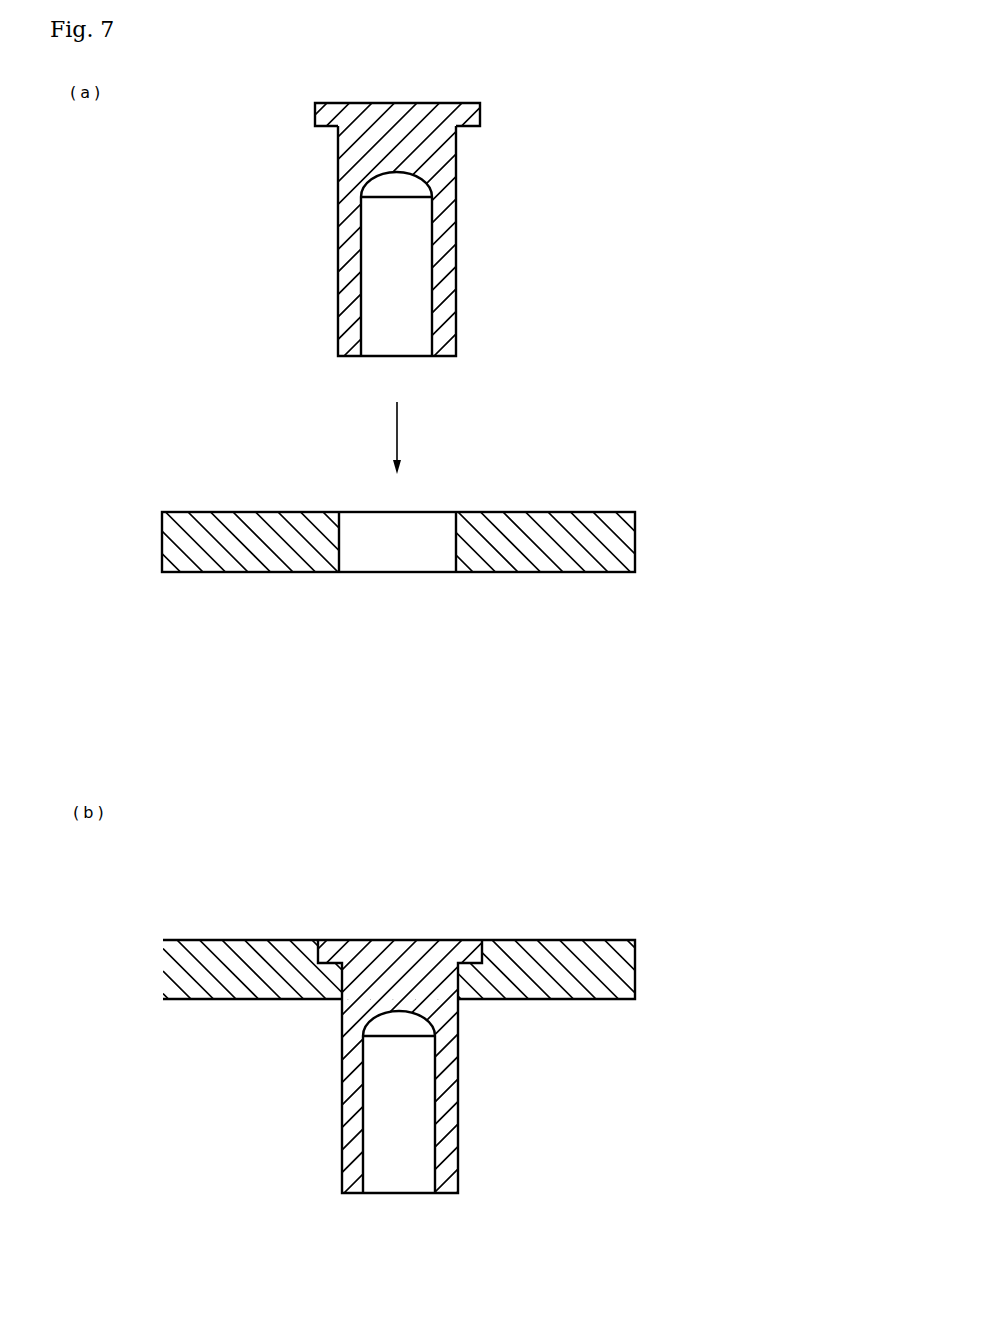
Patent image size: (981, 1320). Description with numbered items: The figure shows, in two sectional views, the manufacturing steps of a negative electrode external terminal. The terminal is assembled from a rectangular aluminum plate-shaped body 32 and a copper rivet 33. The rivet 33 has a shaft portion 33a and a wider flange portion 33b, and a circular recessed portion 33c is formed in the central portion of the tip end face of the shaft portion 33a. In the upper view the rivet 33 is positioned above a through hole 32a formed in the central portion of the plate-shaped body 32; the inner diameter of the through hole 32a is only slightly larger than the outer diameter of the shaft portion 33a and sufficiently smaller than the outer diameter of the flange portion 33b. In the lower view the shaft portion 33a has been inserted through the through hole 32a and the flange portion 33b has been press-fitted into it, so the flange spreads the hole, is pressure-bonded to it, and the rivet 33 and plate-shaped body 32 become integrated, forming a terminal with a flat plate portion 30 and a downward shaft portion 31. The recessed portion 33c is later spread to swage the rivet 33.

The flat plate portion 30 is at (416, 1041).
The shaft portion 31 is at (458, 1117).
The plate-shaped body 32 is at (398, 495).
The through hole 32a is at (443, 513).
The rivet 33 is at (454, 259).
The shaft portion 33a is at (457, 284).
The flange portion 33b is at (473, 115).
The recessed portion 33c is at (361, 317).